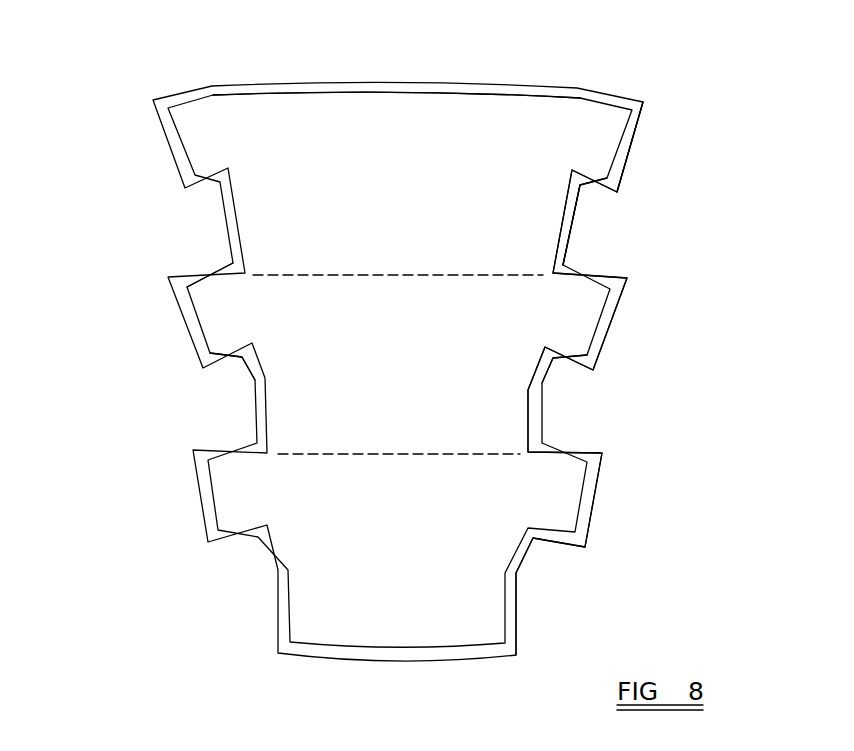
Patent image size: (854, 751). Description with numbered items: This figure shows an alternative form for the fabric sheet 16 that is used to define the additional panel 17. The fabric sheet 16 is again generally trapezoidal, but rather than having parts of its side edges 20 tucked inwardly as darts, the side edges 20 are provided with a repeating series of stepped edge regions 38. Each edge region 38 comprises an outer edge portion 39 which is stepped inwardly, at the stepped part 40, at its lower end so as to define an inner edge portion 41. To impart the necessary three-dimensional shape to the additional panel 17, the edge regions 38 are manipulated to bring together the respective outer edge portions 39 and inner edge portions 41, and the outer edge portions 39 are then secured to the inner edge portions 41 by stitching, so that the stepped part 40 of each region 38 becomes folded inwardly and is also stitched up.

The fabric sheet 16 is at (170, 540).
The additional panel 17 is at (460, 117).
The side edges 20 is at (197, 392).
The stepped edge regions 38 is at (673, 470).
The outer edge portion 39 is at (635, 138).
The stepped part 40 is at (580, 187).
The inner edge portion 41 is at (568, 233).